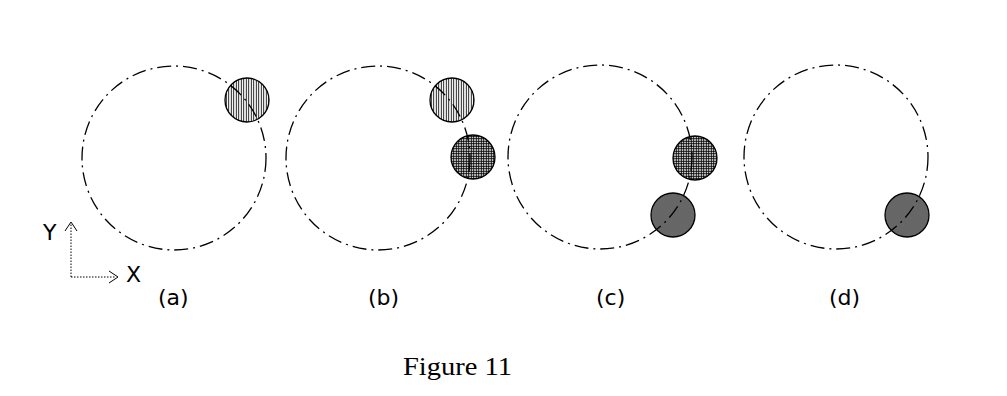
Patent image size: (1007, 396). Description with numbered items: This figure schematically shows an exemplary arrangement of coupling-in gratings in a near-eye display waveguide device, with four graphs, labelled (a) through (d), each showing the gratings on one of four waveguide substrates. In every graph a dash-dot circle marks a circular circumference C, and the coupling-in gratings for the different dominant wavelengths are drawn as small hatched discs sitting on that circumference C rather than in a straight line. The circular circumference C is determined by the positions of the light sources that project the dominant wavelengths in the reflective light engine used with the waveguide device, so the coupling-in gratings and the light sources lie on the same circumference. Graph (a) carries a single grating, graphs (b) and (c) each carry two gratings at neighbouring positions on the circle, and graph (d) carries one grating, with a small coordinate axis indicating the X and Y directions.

The circular circumference C is at (110, 88).